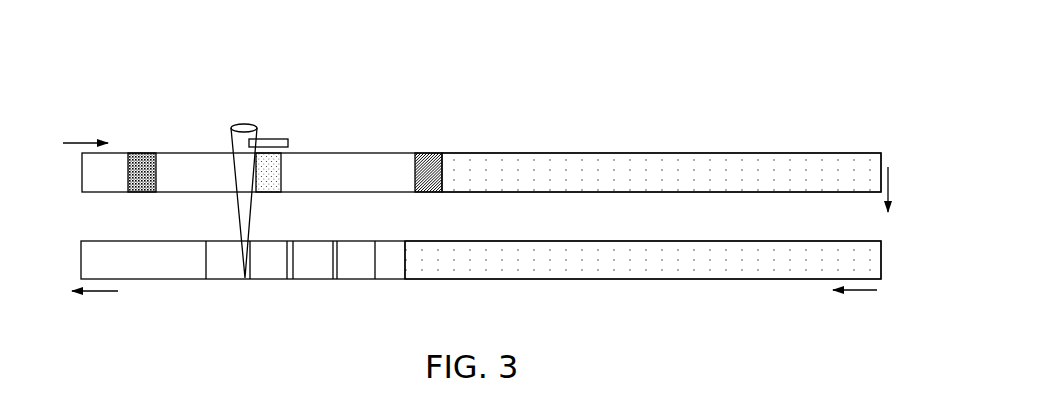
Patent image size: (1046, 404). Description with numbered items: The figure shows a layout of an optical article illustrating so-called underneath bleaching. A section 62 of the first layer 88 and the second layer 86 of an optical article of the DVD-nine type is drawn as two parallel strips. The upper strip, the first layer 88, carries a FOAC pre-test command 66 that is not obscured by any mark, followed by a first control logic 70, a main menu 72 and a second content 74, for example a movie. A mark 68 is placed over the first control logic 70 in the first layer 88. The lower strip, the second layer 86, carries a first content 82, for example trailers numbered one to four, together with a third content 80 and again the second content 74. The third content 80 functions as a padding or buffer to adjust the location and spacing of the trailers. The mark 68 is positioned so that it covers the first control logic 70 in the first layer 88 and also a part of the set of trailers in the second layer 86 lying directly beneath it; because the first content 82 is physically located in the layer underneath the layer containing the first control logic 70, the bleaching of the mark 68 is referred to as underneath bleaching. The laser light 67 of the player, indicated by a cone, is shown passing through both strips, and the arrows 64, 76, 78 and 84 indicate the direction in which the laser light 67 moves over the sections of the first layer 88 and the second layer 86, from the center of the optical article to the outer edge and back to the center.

The section 62 is at (776, 40).
The arrow 64 is at (85, 141).
The FOAC pre-test command 66 is at (146, 153).
The laser light 67 is at (243, 124).
The mark 68 is at (268, 139).
The first control logic 70 is at (275, 169).
The main menu 72 is at (432, 153).
The second content 74 is at (712, 158).
The arrow 76 is at (880, 199).
The arrow 78 is at (855, 292).
The third content 80 is at (387, 272).
The first content 82 is at (313, 276).
The arrow 84 is at (100, 292).
The layer 1 86 is at (81, 260).
The layer 0 88 is at (82, 172).